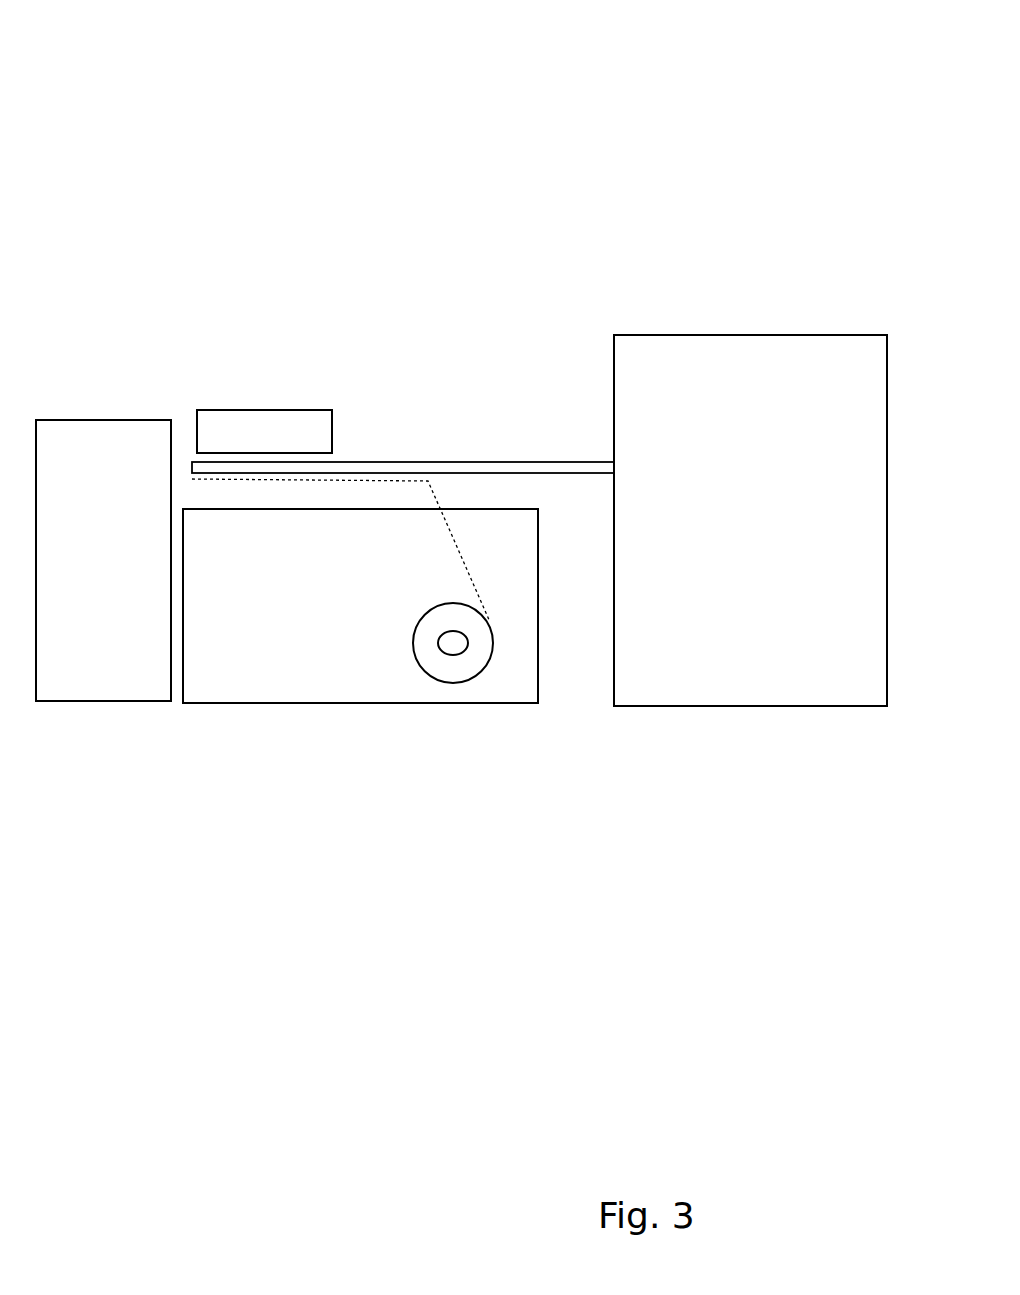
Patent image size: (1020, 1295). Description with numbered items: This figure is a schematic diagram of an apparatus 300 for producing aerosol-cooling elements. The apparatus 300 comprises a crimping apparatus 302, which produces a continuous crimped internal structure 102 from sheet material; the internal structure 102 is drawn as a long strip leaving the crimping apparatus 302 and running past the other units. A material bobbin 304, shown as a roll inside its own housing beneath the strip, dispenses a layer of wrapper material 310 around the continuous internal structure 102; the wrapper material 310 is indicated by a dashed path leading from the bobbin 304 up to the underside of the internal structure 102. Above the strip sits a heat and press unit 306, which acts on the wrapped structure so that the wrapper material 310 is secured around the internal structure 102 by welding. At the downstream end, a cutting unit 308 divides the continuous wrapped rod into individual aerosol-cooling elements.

The apparatus 300 is at (658, 88).
The crimping apparatus 302 is at (842, 710).
The material bobbin 304 is at (484, 669).
The heat and press unit 306 is at (278, 410).
The cutting unit 308 is at (85, 420).
The wrapper material 310 is at (340, 482).
The continuous internal structure 102 is at (546, 462).